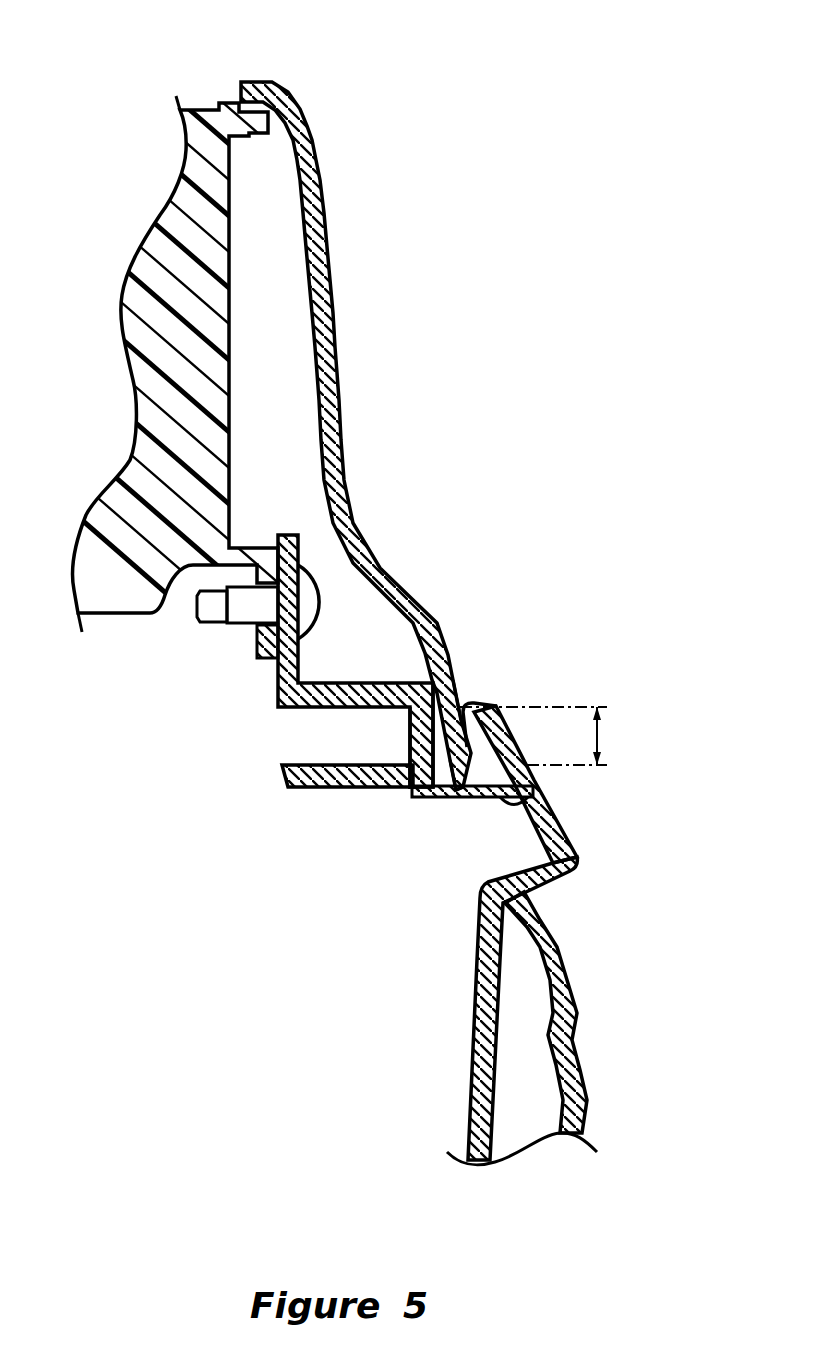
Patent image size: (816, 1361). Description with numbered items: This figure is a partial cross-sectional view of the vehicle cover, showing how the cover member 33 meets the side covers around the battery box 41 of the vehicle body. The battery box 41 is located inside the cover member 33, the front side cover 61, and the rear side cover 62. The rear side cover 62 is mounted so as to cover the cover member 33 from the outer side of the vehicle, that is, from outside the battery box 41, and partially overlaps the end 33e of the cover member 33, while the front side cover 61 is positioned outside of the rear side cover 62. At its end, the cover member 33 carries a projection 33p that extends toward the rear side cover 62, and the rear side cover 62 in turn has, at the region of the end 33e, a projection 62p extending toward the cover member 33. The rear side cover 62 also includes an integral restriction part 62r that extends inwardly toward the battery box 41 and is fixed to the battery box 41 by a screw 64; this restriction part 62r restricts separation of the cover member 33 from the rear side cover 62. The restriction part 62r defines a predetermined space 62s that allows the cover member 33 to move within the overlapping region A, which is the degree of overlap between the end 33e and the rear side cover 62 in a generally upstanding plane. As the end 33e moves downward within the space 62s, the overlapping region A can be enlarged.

The battery box 41 is at (208, 110).
The cover member 33 is at (340, 405).
The screw 64 is at (312, 604).
The rear side cover 62 is at (567, 874).
The front side cover 61 is at (579, 1030).
The projection 62p is at (472, 705).
The projection 33p is at (497, 710).
The restriction part 62r is at (408, 733).
The space 62s is at (488, 778).
The end 33e is at (447, 770).
The overlapping region A is at (600, 730).